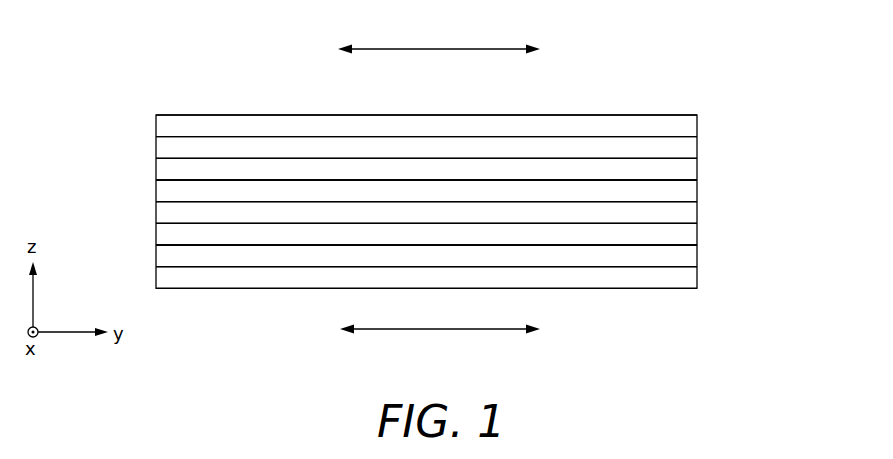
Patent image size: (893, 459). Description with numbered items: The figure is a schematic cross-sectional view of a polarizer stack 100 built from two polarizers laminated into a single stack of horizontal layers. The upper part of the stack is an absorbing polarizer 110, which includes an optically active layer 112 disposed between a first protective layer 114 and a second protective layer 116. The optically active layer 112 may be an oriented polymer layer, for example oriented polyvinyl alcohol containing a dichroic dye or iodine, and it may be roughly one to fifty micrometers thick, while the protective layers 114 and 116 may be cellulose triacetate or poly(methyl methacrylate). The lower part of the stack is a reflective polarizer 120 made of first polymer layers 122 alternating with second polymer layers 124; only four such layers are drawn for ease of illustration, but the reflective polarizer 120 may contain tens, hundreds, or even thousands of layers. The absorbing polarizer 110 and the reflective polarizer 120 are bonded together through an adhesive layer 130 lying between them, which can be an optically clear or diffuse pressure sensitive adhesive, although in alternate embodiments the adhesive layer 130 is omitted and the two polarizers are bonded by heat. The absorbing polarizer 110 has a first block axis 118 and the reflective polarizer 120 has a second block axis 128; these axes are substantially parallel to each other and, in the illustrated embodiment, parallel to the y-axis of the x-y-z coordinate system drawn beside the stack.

The polarizer stack 100 is at (112, 31).
The absorbing polarizer 110 is at (139, 115).
The optically active layer 112 is at (682, 143).
The first protective layer 114 is at (243, 122).
The second protective layer 116 is at (337, 170).
The first block axis 118 is at (455, 47).
The reflective polarizer 120 is at (139, 204).
The first polymer layers 122 is at (685, 207).
The second polymer layers 124 is at (597, 235).
The second block axis 128 is at (450, 331).
The adhesive layer 130 is at (682, 188).